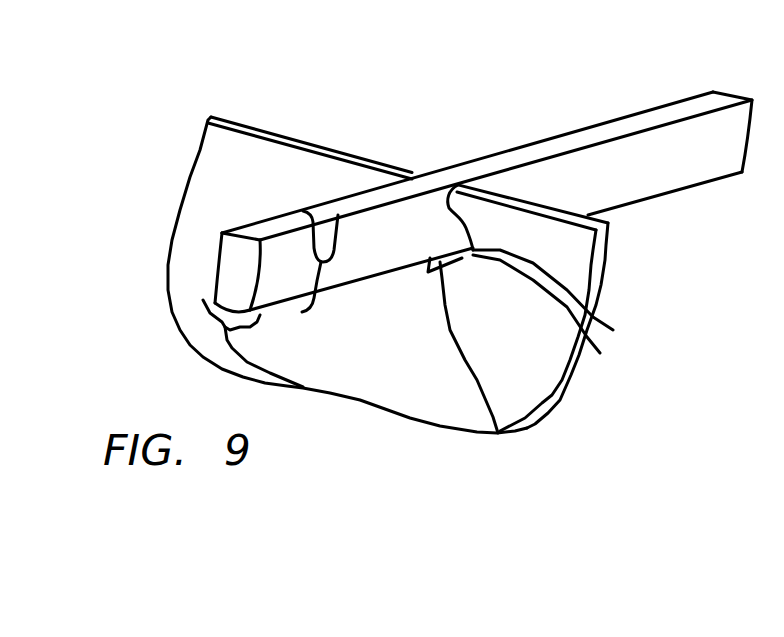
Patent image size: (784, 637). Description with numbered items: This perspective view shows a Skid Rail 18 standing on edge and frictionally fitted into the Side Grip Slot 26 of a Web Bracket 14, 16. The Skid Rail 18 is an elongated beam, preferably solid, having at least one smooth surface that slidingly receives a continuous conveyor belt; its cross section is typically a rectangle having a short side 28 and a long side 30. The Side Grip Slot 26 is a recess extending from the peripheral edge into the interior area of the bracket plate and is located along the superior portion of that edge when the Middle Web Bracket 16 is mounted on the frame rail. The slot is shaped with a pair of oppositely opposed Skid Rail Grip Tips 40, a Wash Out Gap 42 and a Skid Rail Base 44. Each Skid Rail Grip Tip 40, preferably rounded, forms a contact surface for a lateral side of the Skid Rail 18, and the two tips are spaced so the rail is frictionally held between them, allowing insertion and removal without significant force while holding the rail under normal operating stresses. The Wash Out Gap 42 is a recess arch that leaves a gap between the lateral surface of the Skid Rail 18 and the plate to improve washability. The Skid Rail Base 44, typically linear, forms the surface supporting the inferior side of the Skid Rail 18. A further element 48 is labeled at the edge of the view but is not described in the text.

The Web Bracket 14 is at (355, 261).
The Middle Web Bracket 16 is at (223, 152).
The Skid Rail 18 is at (700, 140).
The Side Grip Slot 26 is at (613, 330).
The short side 28 is at (338, 240).
The long side 30 is at (303, 387).
The Skid Rail Grip Tip 40 is at (458, 185).
The Wash Out Gap 42 is at (600, 353).
The Skid Rail Base 44 is at (498, 433).
The adjacent component 48 is at (783, 471).